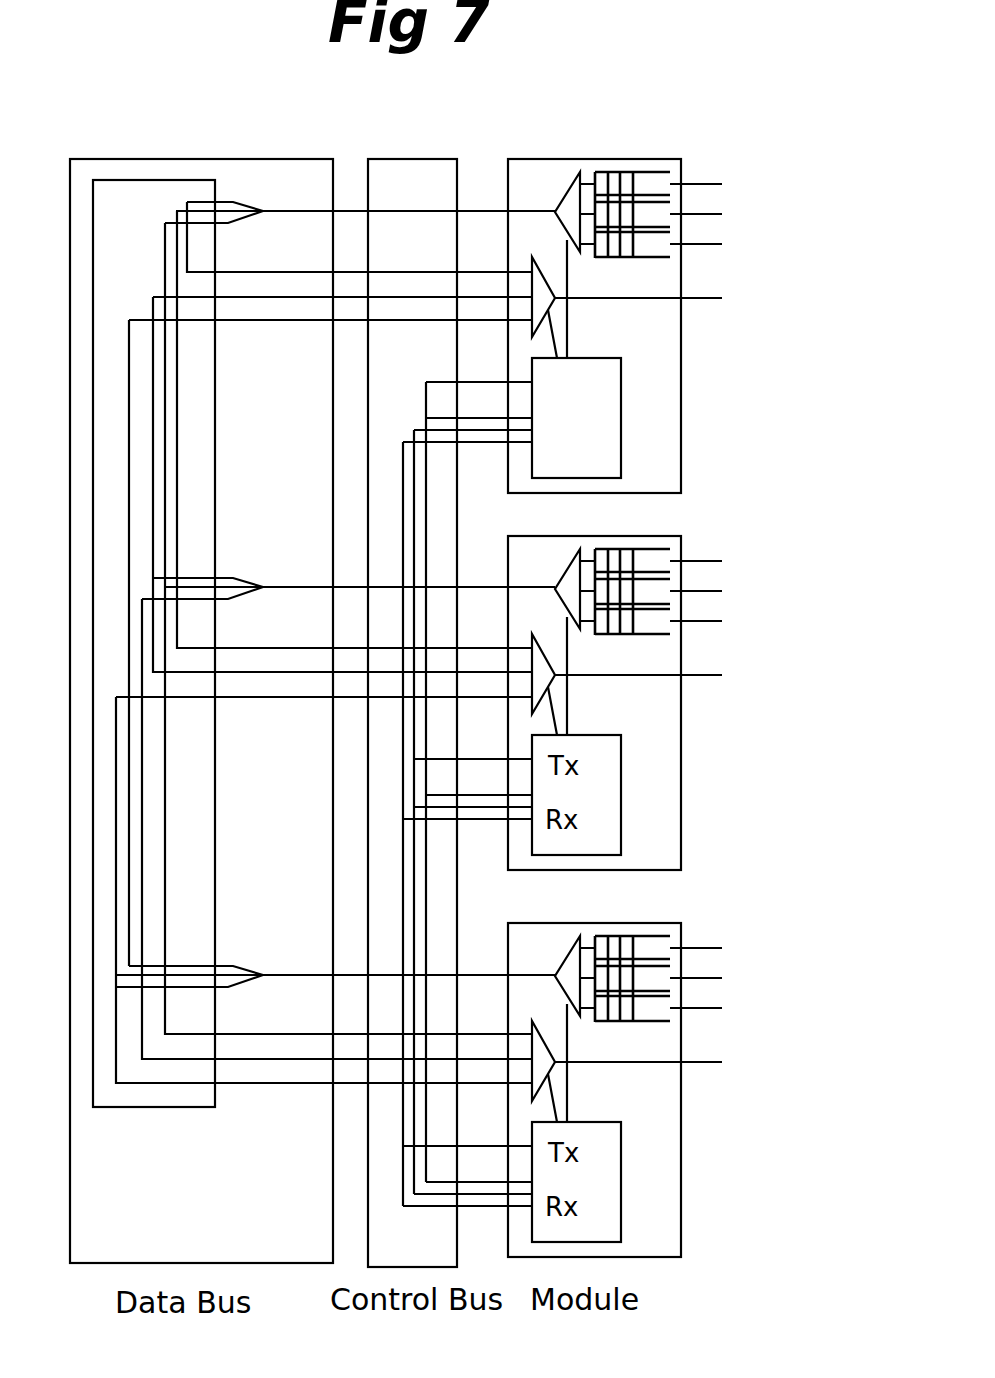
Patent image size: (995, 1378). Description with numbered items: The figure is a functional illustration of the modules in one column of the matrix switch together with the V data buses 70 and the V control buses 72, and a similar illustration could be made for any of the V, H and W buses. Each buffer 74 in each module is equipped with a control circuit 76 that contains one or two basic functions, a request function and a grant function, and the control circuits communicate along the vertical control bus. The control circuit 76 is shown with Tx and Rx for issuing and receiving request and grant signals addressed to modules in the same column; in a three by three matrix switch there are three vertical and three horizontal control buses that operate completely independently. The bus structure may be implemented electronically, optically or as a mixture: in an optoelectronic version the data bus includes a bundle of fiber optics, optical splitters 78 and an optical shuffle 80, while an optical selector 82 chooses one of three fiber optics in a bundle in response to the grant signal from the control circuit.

The V data bus 70 is at (205, 159).
The V control bus 72 is at (447, 159).
The buffer 74 is at (648, 172).
The control circuit 76 is at (620, 440).
The optical splitter 78 is at (235, 201).
The optical shuffle 80 is at (110, 180).
The optical selector 82 is at (552, 306).